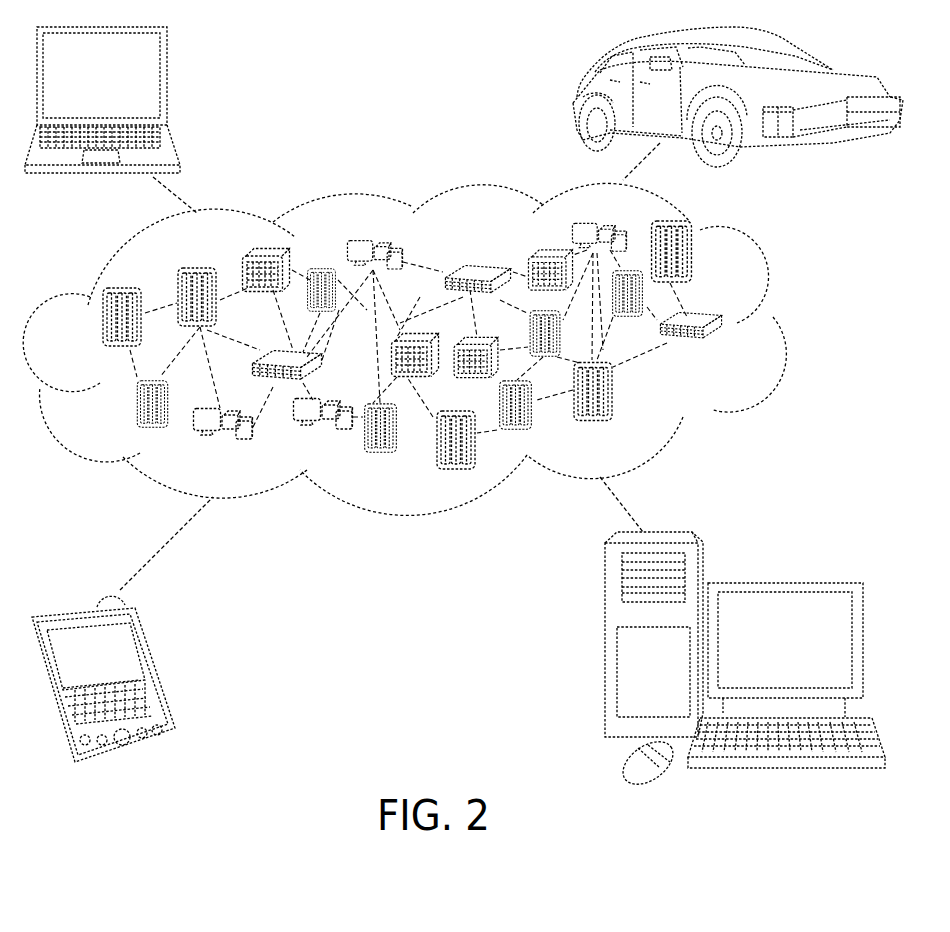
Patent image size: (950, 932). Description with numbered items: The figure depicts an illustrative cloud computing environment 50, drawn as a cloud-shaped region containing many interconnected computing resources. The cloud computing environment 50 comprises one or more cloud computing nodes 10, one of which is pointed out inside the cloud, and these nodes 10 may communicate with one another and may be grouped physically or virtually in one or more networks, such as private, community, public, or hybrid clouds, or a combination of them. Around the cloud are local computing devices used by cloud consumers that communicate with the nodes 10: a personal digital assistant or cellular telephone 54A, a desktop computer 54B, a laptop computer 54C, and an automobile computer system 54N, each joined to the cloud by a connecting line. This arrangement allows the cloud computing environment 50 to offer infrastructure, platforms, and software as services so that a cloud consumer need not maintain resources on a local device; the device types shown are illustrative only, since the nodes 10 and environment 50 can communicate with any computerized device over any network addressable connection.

The cloud computing node 10 is at (728, 352).
The cloud computing environment 50 is at (780, 323).
The personal digital assistant or cellular telephone 54A is at (155, 665).
The desktop computer 54B is at (785, 582).
The laptop computer 54C is at (167, 80).
The automobile computer system 54N is at (568, 92).